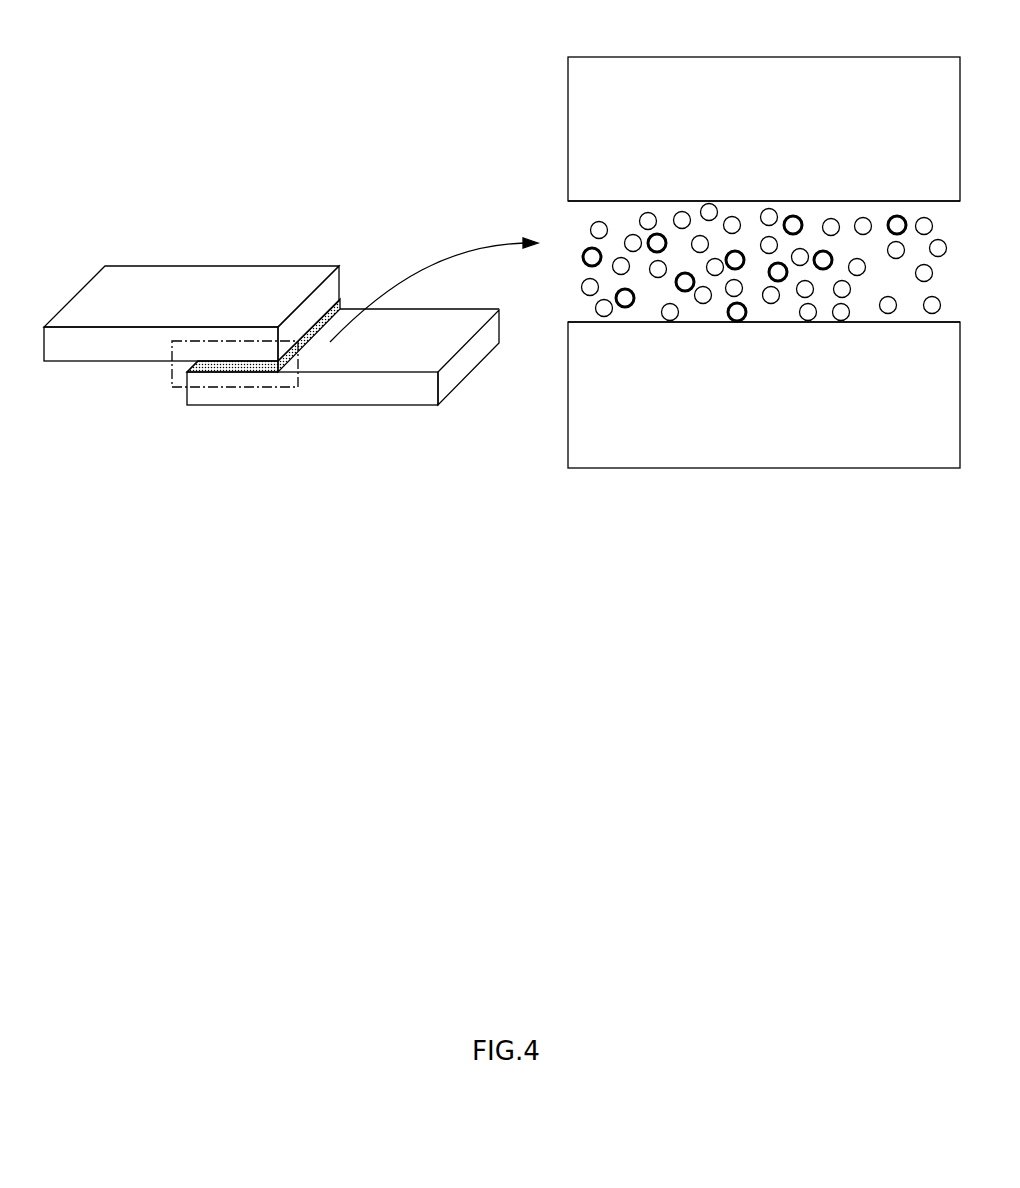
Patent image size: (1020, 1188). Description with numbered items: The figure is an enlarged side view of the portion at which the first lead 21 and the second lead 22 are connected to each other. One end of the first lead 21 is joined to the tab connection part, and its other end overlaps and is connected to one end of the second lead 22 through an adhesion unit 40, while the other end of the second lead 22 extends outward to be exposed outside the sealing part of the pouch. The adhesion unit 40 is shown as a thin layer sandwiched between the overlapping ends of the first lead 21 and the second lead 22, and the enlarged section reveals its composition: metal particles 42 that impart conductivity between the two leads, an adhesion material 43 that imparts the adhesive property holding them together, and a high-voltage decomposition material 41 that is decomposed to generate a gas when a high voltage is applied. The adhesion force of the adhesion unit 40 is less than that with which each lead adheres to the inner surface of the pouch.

The first lead 21 is at (77, 350).
The second lead 22 is at (368, 397).
The adhesion unit 40 is at (230, 365).
The high-voltage decomposition material 41 is at (792, 212).
The metal particles 42 is at (646, 211).
The adhesion material 43 is at (908, 212).